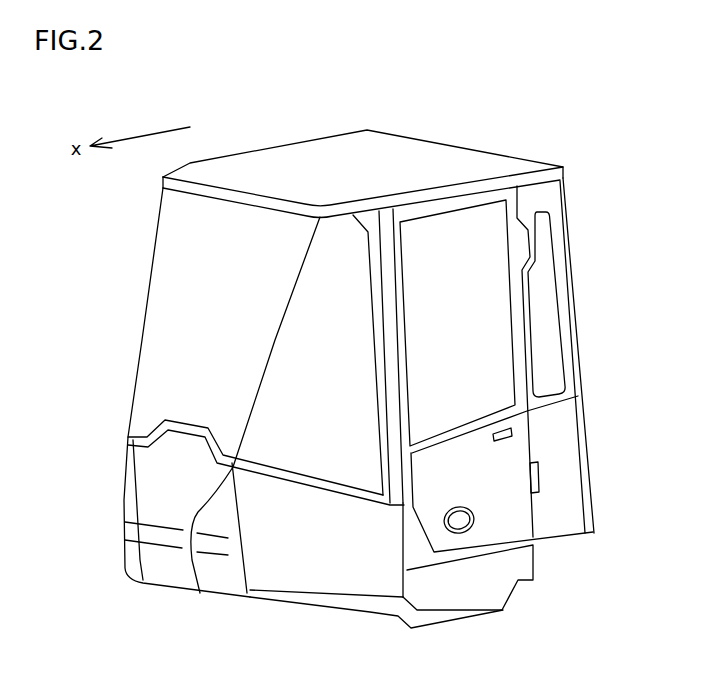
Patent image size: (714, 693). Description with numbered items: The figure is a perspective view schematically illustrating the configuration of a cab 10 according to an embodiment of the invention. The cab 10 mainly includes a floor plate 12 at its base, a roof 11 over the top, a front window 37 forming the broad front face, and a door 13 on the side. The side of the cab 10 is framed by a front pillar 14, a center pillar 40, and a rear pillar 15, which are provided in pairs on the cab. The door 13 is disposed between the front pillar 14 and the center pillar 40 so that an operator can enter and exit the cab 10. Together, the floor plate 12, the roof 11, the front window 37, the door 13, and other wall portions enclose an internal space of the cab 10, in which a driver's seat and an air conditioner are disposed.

The cab 10 is at (548, 99).
The roof 11 is at (412, 150).
The floor plate 12 is at (302, 605).
The door 13 is at (495, 498).
The front pillar 14 is at (395, 418).
The rear pillar 15 is at (573, 329).
The front window 37 is at (200, 278).
The center pillar 40 is at (527, 303).